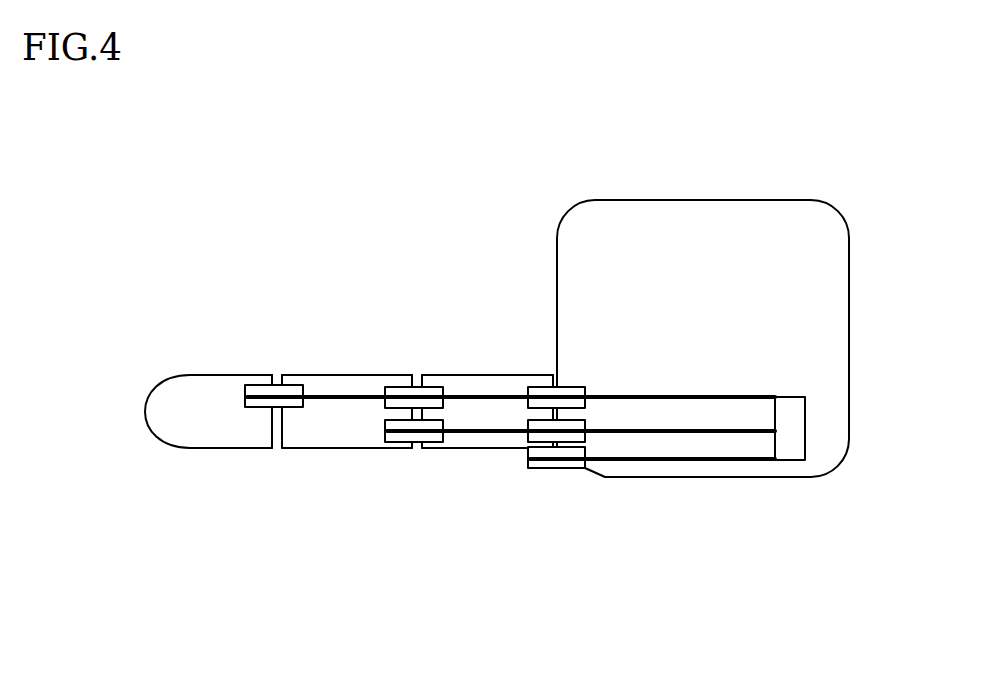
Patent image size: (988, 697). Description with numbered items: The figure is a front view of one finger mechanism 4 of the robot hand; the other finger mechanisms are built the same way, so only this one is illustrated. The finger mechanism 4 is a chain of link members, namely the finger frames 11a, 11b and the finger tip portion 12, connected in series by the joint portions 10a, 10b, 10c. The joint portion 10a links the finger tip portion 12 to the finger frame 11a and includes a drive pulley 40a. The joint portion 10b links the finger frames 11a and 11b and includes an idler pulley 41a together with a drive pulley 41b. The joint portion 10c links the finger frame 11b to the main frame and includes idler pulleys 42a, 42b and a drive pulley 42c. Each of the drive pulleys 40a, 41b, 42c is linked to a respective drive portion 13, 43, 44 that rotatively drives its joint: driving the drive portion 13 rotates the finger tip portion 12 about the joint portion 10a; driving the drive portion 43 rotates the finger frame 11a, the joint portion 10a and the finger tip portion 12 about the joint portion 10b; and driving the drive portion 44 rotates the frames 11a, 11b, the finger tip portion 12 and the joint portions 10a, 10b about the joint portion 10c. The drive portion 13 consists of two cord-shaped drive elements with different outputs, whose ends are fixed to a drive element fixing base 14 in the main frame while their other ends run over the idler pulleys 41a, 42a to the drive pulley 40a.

The finger mechanism 4 is at (165, 348).
The joint portion 10a is at (273, 362).
The joint portion 10b is at (413, 355).
The joint portion 10c is at (542, 355).
The finger frame 11a is at (320, 428).
The finger frame 11b is at (470, 435).
The finger tip portion 12 is at (177, 425).
The drive portion 13 is at (732, 393).
The drive element fixing base 14 is at (793, 423).
The drive pulley 40a is at (285, 392).
The idler pulley 41a is at (402, 392).
The drive pulley 41b is at (405, 440).
The idler pulley 42a is at (540, 387).
The idler pulley 42b is at (537, 424).
The drive pulley 42c is at (547, 453).
The drive portion 43 is at (743, 433).
The drive portion 44 is at (645, 463).